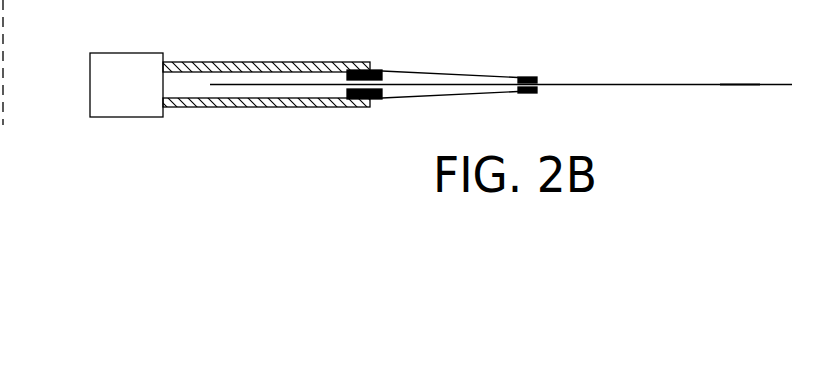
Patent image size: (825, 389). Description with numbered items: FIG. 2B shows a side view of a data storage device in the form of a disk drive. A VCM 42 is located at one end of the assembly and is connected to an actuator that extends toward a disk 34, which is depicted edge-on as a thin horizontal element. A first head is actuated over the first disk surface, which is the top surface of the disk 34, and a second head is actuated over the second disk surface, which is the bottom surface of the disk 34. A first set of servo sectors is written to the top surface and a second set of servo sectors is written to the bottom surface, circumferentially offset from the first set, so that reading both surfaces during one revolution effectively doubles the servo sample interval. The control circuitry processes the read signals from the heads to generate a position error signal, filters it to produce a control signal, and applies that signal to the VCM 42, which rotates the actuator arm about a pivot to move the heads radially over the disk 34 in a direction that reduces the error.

The VCM 42 is at (130, 53).
The disk 34 is at (637, 83).